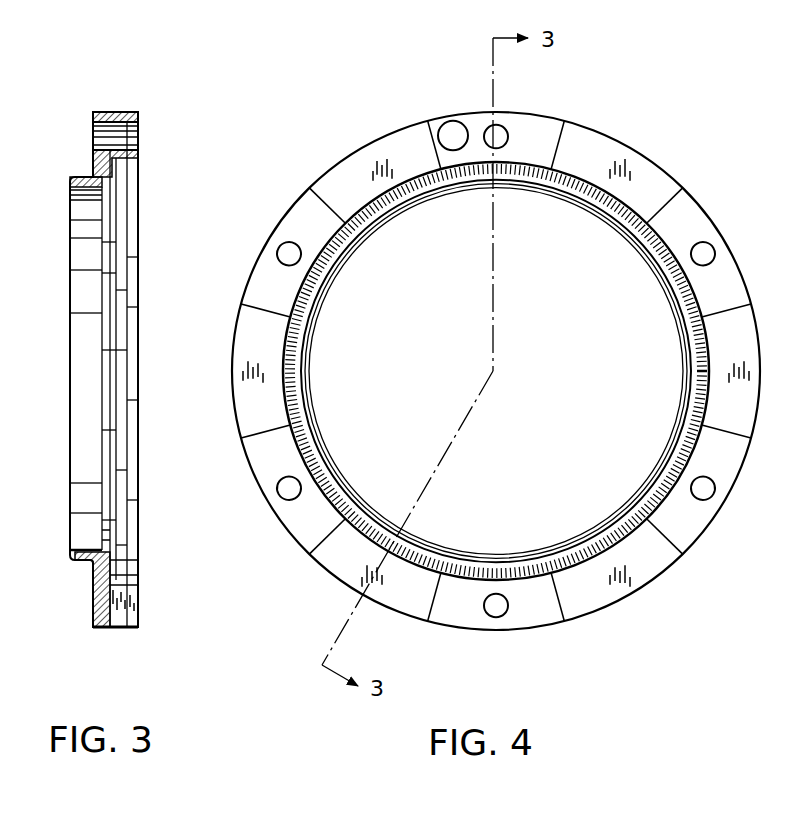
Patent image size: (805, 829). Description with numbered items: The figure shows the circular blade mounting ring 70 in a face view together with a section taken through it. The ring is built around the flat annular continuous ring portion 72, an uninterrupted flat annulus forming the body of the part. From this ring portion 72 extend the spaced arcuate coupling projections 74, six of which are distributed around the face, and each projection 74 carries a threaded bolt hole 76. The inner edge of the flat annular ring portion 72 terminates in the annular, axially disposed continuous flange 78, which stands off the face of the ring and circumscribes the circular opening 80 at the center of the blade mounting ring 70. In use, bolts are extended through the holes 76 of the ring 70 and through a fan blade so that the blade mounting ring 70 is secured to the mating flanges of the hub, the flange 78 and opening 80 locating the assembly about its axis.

In FIG. 3, the blade mounting ring 70 is at (90, 583).
In FIG. 4, the blade mounting ring 70 is at (643, 592).
In FIG. 3, the flat annular continuous ring portion 72 is at (100, 160).
In FIG. 4, the flat annular continuous ring portion 72 is at (352, 232).
In FIG. 3, the arcuate coupling projections 74 is at (118, 112).
In FIG. 4, the arcuate coupling projections 74 is at (472, 123).
In FIG. 3, the threaded bolt hole 76 is at (140, 129).
In FIG. 4, the threaded bolt hole 76 is at (498, 128).
In FIG. 3, the annular axially disposed continuous flange 78 is at (80, 195).
In FIG. 3, the circular opening 80 is at (88, 553).
In FIG. 4, the circular opening 80 is at (306, 336).